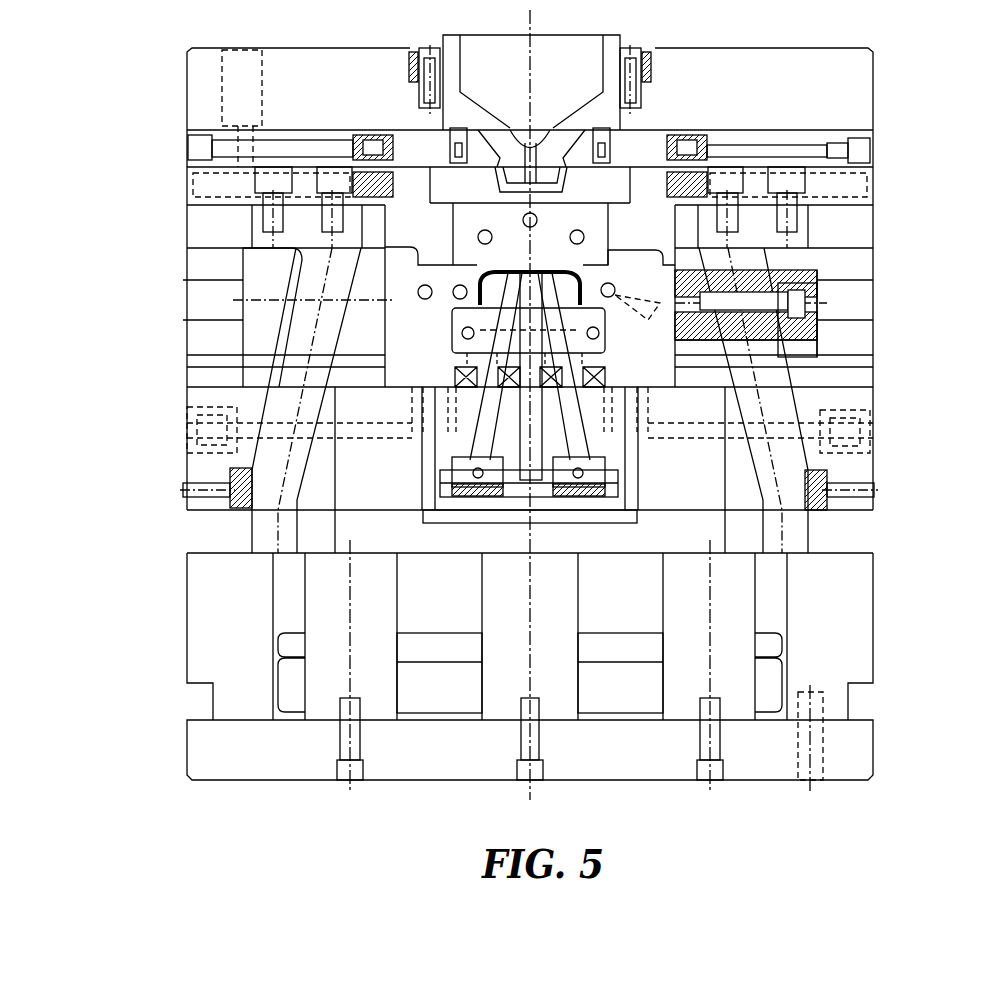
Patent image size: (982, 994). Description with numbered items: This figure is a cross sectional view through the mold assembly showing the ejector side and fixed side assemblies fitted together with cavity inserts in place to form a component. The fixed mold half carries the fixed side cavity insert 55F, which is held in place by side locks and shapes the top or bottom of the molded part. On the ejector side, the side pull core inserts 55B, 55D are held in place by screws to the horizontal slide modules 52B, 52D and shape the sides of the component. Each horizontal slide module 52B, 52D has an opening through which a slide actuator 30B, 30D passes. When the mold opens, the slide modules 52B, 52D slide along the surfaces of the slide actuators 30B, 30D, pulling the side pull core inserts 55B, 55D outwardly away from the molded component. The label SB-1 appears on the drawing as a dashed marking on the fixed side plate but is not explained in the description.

The horizontal slide module 52B is at (362, 312).
The slide actuator 30B is at (300, 387).
The fixed side cavity insert 55F is at (587, 250).
The side pull core insert 55D is at (608, 318).
The horizontal slide module 52D is at (688, 347).
The slide actuator 30D is at (763, 403).
The side pull core insert 55B is at (409, 392).
The sensor SB-1 is at (242, 108).